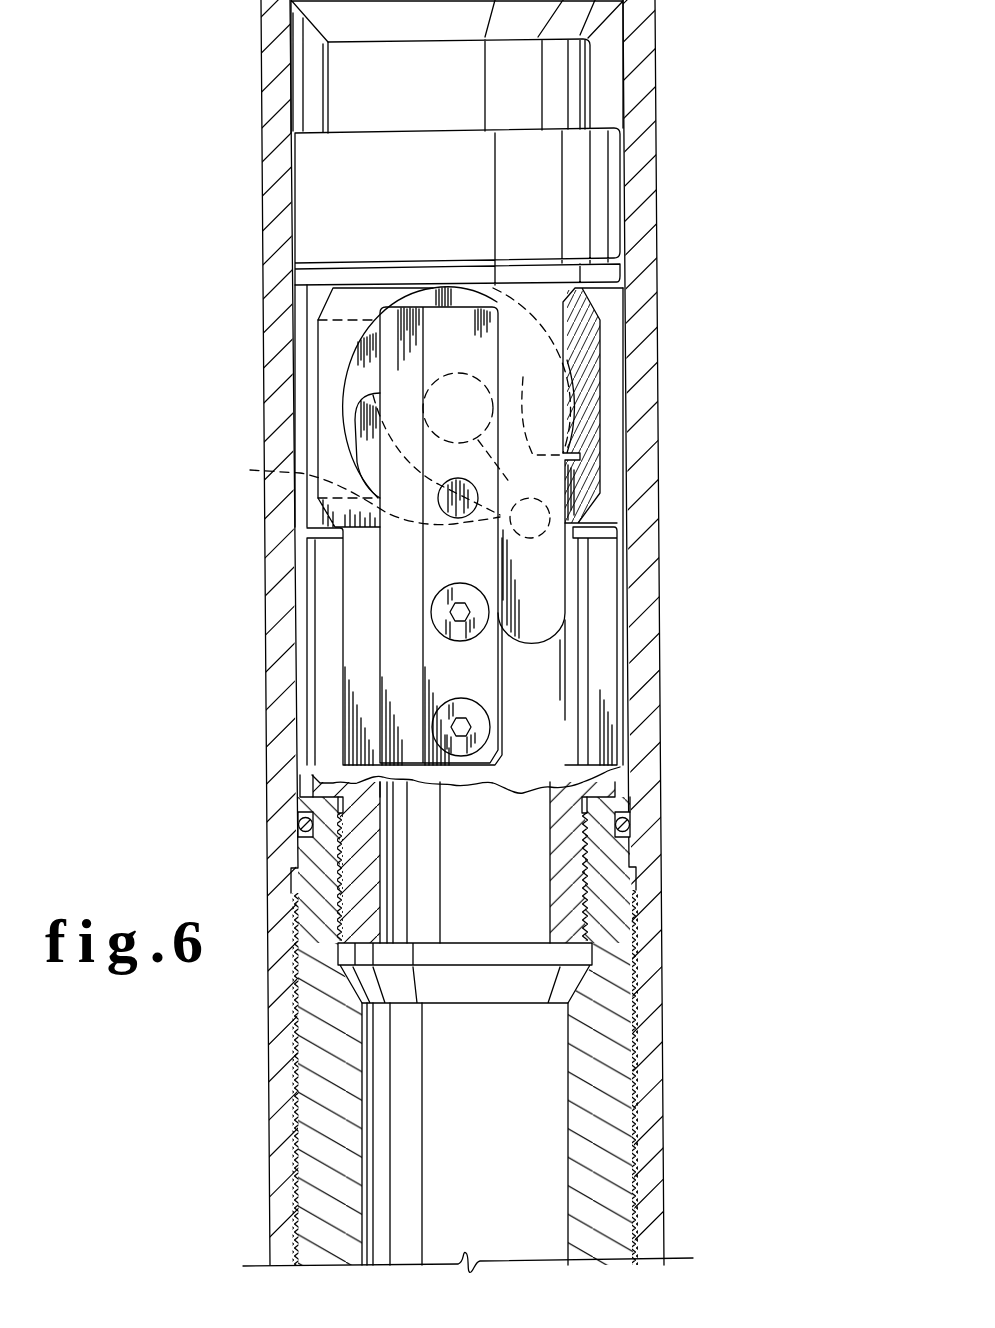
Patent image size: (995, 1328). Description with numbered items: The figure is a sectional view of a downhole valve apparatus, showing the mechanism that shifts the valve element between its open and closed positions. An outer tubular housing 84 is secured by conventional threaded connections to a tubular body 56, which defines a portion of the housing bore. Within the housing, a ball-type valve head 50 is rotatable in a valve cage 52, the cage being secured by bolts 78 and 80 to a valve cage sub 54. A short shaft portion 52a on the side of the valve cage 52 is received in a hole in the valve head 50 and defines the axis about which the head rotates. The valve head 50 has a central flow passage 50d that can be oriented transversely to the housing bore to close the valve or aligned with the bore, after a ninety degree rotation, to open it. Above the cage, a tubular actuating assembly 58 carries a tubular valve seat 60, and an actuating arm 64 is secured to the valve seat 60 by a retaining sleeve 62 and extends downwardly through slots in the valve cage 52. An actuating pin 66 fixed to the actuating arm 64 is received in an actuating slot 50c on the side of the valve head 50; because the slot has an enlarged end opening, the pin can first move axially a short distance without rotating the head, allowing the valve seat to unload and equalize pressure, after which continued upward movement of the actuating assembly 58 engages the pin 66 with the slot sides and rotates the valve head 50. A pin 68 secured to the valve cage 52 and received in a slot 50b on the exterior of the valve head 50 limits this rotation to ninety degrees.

The valve head 50 is at (328, 353).
The slot 50b is at (363, 430).
The actuating slot 50c is at (467, 433).
The central flow passage 50d is at (354, 493).
The valve cage 52 is at (435, 663).
The short shaft portion 52a is at (458, 370).
The valve cage sub 54 is at (602, 645).
The tubular body 56 is at (307, 1073).
The tubular actuating assembly 58 is at (327, 20).
The tubular valve seat 60 is at (338, 93).
The retaining sleeve 62 is at (307, 205).
The actuating arm 64 is at (545, 408).
The actuating pin 66 is at (547, 538).
The pin 68 is at (448, 503).
The bolt 78 is at (472, 625).
The bolt 80 is at (482, 727).
The outer tubular housing 84 is at (280, 1138).